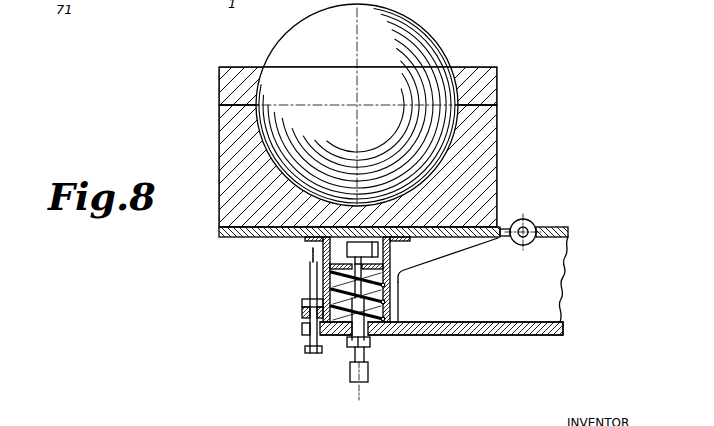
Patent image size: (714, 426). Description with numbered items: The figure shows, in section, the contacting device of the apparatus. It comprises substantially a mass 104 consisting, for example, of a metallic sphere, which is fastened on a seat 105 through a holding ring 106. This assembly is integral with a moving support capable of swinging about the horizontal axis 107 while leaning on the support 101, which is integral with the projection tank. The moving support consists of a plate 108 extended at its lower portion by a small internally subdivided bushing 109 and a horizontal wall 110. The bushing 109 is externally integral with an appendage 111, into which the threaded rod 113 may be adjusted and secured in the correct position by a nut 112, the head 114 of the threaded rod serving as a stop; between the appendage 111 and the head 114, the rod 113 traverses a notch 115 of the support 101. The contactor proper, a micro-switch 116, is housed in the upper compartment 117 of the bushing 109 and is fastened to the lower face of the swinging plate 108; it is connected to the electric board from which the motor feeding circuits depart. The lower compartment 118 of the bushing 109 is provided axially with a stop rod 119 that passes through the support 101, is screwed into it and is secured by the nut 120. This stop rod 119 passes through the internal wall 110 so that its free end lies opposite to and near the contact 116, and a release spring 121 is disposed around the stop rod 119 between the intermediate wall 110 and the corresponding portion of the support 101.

The support 101 is at (512, 316).
The mass 104 is at (424, 33).
The seat 105 is at (222, 143).
The holding ring 106 is at (222, 87).
The horizontal axis 107 is at (528, 220).
The plate 108 is at (232, 239).
The bushing 109 is at (323, 264).
The horizontal wall 110 is at (391, 257).
The appendage 111 is at (300, 313).
The nut 112 is at (300, 302).
The threaded rod 113 is at (305, 347).
The head 114 is at (312, 355).
The notch 115 is at (302, 329).
The micro-switch 116 is at (345, 250).
The upper compartment 117 is at (413, 252).
The lower compartment 118 is at (340, 323).
The stop rod 119 is at (370, 337).
The nut 120 is at (372, 363).
The release spring 121 is at (402, 296).